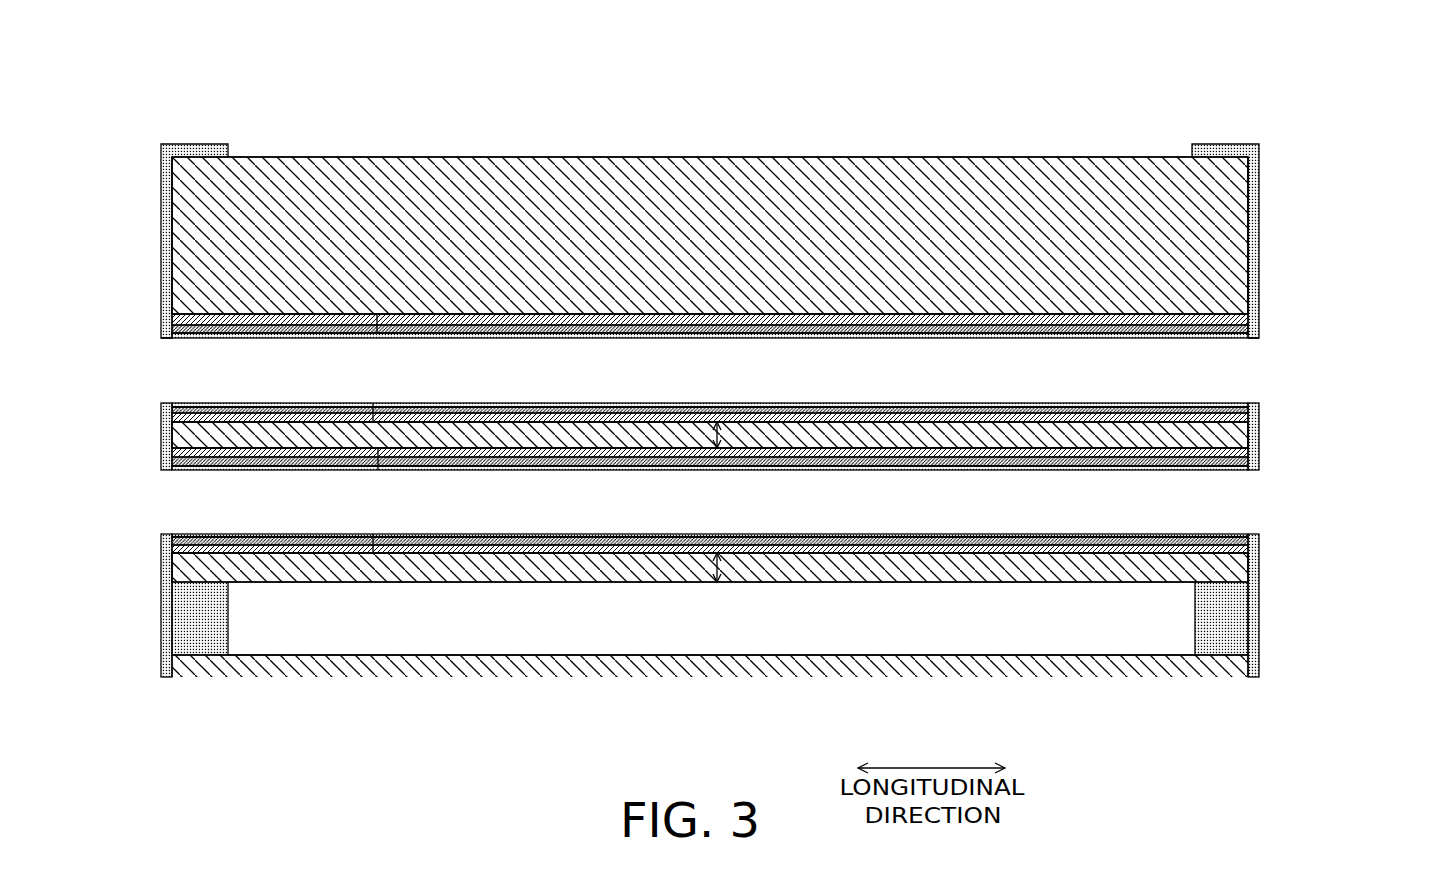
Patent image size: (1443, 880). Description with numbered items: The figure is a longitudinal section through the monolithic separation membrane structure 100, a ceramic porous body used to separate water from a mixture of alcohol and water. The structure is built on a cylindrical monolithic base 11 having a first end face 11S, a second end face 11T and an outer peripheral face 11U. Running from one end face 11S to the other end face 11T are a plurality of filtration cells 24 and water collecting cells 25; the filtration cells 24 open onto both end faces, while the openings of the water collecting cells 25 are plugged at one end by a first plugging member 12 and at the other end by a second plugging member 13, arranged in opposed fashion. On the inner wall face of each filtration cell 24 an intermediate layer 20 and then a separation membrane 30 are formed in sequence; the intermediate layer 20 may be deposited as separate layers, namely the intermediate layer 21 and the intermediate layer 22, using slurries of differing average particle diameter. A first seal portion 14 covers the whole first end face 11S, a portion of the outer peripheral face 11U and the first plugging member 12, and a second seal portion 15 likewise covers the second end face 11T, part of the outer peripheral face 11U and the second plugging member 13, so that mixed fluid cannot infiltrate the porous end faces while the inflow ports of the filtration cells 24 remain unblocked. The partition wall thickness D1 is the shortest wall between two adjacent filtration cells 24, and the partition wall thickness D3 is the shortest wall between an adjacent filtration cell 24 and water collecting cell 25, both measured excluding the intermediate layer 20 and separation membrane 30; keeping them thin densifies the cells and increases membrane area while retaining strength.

The monolithic separation membrane structure 100 is at (1263, 123).
The monolithic base 11 is at (183, 293).
The outer peripheral face 11U is at (366, 145).
The first end face 11S is at (170, 273).
The second end face 11T is at (1250, 272).
The first plugging member 12 is at (212, 630).
The second plugging member 13 is at (1223, 633).
The first seal portion 14 is at (162, 328).
The second seal portion 15 is at (1260, 293).
The intermediate layer 20 is at (1388, 396).
The intermediate layer 21 is at (1252, 318).
The intermediate layer 22 is at (1252, 334).
The filtration cell 24 is at (377, 333).
The water collecting cell 25 is at (373, 582).
The separation membrane 30 is at (1168, 338).
The partition wall thickness D1 is at (718, 435).
The partition wall thickness D3 is at (718, 568).